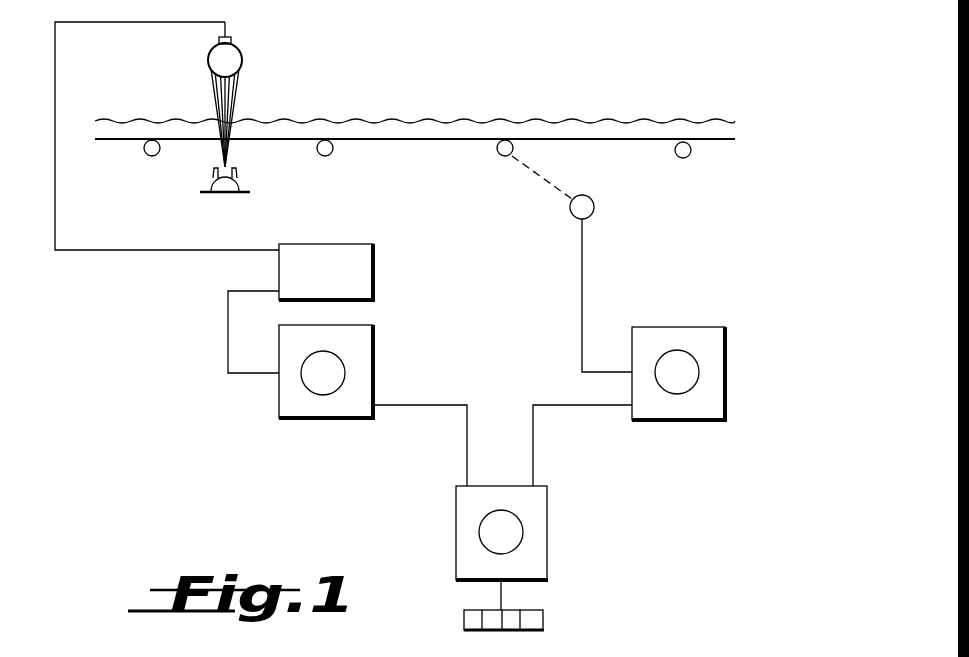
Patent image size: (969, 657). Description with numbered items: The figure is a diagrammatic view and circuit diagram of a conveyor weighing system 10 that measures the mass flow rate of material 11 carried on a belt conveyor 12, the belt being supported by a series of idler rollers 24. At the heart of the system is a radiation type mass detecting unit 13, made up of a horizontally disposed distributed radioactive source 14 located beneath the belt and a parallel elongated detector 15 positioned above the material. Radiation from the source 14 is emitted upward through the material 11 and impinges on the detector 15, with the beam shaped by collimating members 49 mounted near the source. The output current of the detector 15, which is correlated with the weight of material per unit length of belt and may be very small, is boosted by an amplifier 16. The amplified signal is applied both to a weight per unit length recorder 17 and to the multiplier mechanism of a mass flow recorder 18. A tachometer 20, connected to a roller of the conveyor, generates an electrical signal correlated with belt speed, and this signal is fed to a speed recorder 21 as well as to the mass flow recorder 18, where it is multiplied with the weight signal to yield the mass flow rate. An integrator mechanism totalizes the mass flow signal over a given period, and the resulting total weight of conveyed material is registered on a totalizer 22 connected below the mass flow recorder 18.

The weighing system 10 is at (148, 257).
The material 11 is at (777, 44).
The belt conveyor 12 is at (128, 143).
The radiation type mass detecting unit 13 is at (262, 93).
The radioactive source 14 is at (493, 182).
The detector 15 is at (249, 22).
The amplifier 16 is at (515, 271).
The weight per unit length recorder 17 is at (298, 466).
The mass flow recorder 18 is at (730, 471).
The tachometer 20 is at (782, 243).
The speed recorder 21 is at (638, 286).
The totalizer 22 is at (705, 578).
The idler rollers 24 is at (446, 154).
The collimating members 49 is at (251, 160).